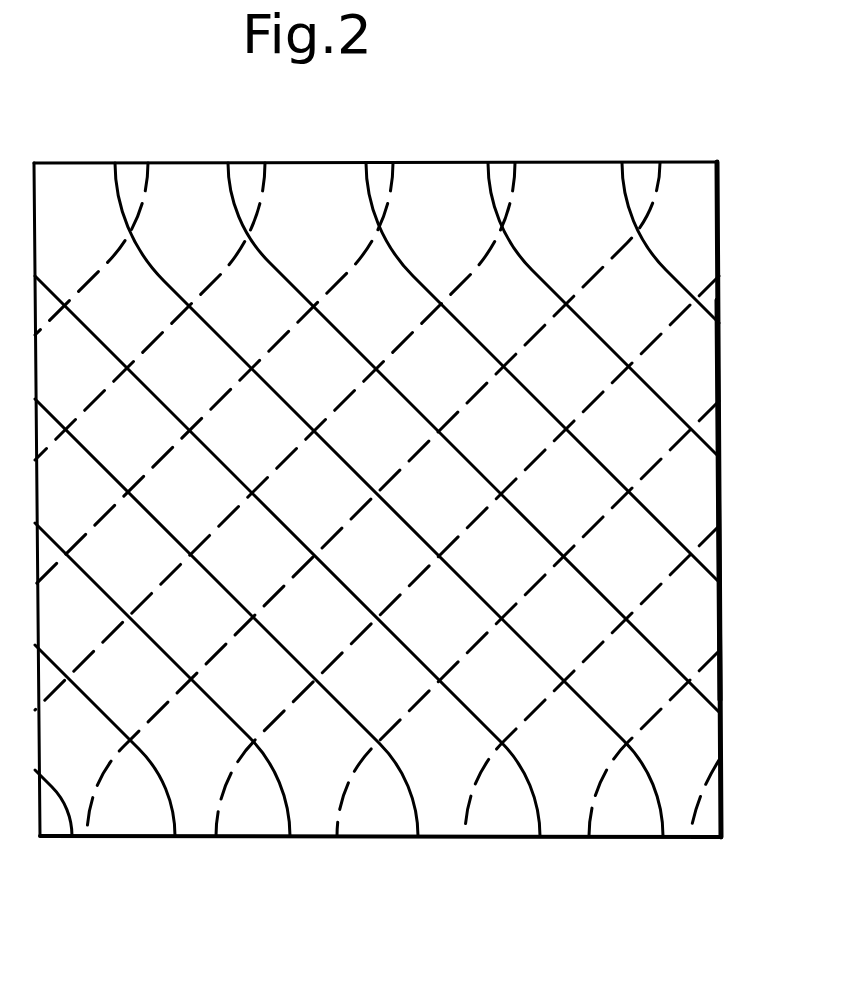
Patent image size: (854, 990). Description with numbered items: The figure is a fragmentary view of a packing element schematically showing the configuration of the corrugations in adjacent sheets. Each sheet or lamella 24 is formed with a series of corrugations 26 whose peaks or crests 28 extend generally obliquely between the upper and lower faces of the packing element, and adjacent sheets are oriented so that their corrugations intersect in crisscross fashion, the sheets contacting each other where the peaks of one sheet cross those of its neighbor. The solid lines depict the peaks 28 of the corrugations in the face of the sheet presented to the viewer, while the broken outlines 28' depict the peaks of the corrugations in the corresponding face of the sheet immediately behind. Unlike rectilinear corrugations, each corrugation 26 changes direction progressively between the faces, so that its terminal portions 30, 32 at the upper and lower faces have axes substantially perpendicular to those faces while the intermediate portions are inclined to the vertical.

The sheet or lamella 24 is at (720, 230).
The corrugations 26 is at (702, 358).
The peaks or crests 28 is at (377, 499).
The peaks of the corrugations of the sheet behind 28' is at (377, 499).
The terminal portion 30 is at (70, 188).
The terminal portion 32 is at (133, 823).